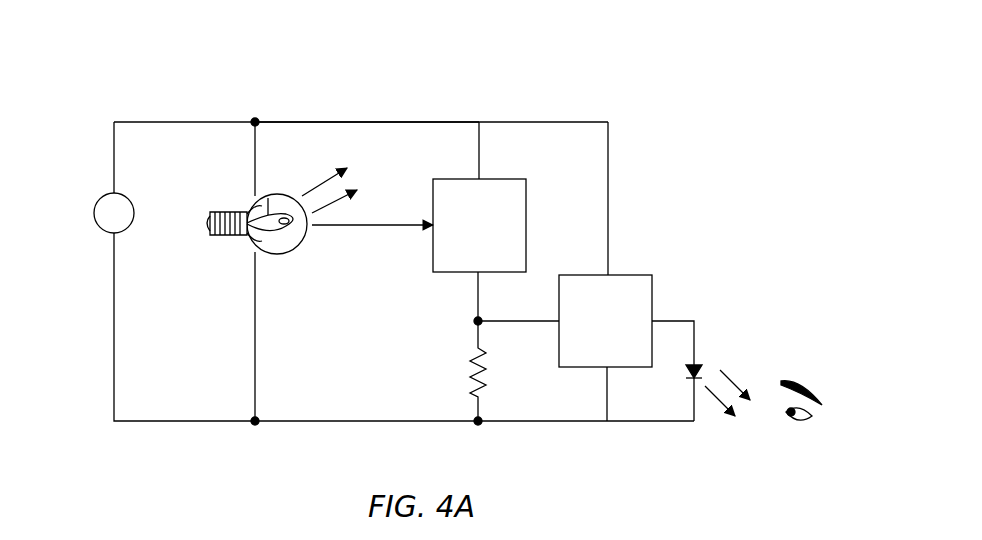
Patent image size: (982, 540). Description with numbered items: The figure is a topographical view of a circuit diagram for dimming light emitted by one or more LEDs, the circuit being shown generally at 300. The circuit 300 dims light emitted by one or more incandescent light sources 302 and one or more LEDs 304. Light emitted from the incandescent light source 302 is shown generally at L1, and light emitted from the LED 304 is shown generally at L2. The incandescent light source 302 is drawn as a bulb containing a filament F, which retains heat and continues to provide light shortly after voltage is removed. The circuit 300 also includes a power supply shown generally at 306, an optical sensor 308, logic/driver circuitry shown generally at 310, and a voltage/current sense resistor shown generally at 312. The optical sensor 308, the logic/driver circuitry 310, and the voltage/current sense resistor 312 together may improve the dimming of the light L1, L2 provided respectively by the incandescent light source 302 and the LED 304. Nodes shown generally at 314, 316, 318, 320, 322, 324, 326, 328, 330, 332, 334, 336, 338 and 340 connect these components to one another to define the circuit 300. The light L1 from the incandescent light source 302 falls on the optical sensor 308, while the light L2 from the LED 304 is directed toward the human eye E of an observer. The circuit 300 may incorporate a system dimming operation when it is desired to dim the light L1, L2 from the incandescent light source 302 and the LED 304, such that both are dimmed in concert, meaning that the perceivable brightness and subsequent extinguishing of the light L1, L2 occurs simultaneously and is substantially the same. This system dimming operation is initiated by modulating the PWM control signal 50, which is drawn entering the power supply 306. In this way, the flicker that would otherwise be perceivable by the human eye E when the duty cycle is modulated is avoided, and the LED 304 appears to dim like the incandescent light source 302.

The circuit 300 is at (738, 12).
The incandescent light source 302 is at (290, 258).
The LED 304 is at (708, 350).
The power supply 306 is at (132, 203).
The optical sensor 308 is at (510, 179).
The logic/driver circuitry 310 is at (640, 275).
The voltage/current sense resistor 312 is at (452, 360).
The node 314 is at (130, 122).
The node 316 is at (255, 165).
The node 318 is at (366, 122).
The node 320 is at (479, 160).
The node 322 is at (572, 122).
The node 324 is at (675, 321).
The node 326 is at (655, 421).
The node 328 is at (607, 385).
The node 330 is at (497, 321).
The node 332 is at (513, 421).
The node 334 is at (478, 305).
The node 336 is at (330, 421).
The node 338 is at (256, 345).
The node 340 is at (205, 421).
The PWM control signal 50 is at (82, 212).
The filament F is at (268, 198).
The light emitted by incandescent light source L1 is at (380, 250).
The light emitted by LED L2 is at (736, 403).
The human eye E is at (808, 362).